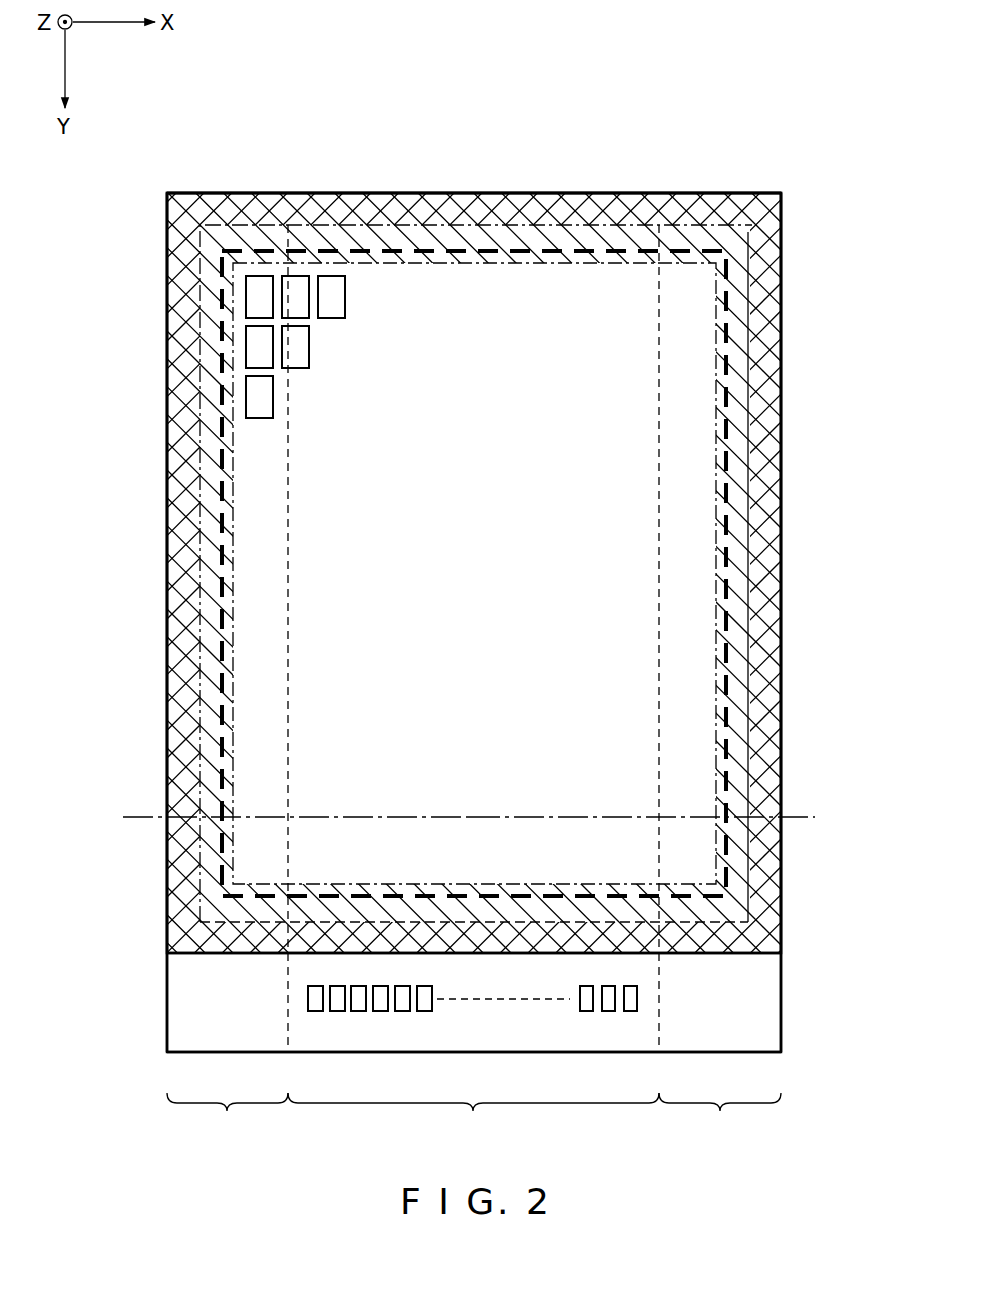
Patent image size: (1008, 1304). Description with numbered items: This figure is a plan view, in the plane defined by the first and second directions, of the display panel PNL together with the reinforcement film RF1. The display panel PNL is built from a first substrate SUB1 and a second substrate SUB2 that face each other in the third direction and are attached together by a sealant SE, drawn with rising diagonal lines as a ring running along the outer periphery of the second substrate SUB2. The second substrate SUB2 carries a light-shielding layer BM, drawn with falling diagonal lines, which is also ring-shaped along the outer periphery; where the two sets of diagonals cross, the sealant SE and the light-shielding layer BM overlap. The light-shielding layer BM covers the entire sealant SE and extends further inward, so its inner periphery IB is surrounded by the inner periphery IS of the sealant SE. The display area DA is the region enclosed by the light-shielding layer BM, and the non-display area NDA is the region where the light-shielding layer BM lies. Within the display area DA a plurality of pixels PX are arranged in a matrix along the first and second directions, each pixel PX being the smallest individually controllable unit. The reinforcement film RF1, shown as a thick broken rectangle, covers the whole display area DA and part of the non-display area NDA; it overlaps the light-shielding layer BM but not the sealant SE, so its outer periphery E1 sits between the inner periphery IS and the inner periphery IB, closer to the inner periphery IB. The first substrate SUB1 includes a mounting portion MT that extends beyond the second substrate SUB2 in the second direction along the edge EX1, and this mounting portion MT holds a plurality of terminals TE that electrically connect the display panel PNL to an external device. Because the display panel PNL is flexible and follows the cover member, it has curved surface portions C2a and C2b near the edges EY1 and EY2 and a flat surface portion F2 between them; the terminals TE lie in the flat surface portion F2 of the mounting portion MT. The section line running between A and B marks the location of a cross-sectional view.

The display panel PNL is at (222, 147).
The pixel PX is at (303, 285).
The first reinforcing member RF1 is at (628, 226).
The first end E1 is at (733, 313).
The inorganic barrier IB is at (713, 405).
The inner surface IS is at (746, 456).
The display area DA is at (688, 554).
The first edge EY1 is at (165, 576).
The second edge EY2 is at (782, 579).
The non-display area NDA is at (746, 612).
The black matrix BM is at (740, 700).
The sealing member SE is at (762, 749).
The section line end A is at (286, 819).
The section line end B is at (653, 819).
The second substrate SUB2 is at (784, 897).
The first substrate SUB1 is at (784, 978).
The mounting portion MT is at (763, 1036).
The extending portion EX1 is at (580, 1055).
The terminal TE is at (316, 1011).
The first corner region C2a is at (227, 1119).
The flexible region F2 is at (473, 685).
The second corner region C2b is at (720, 1119).